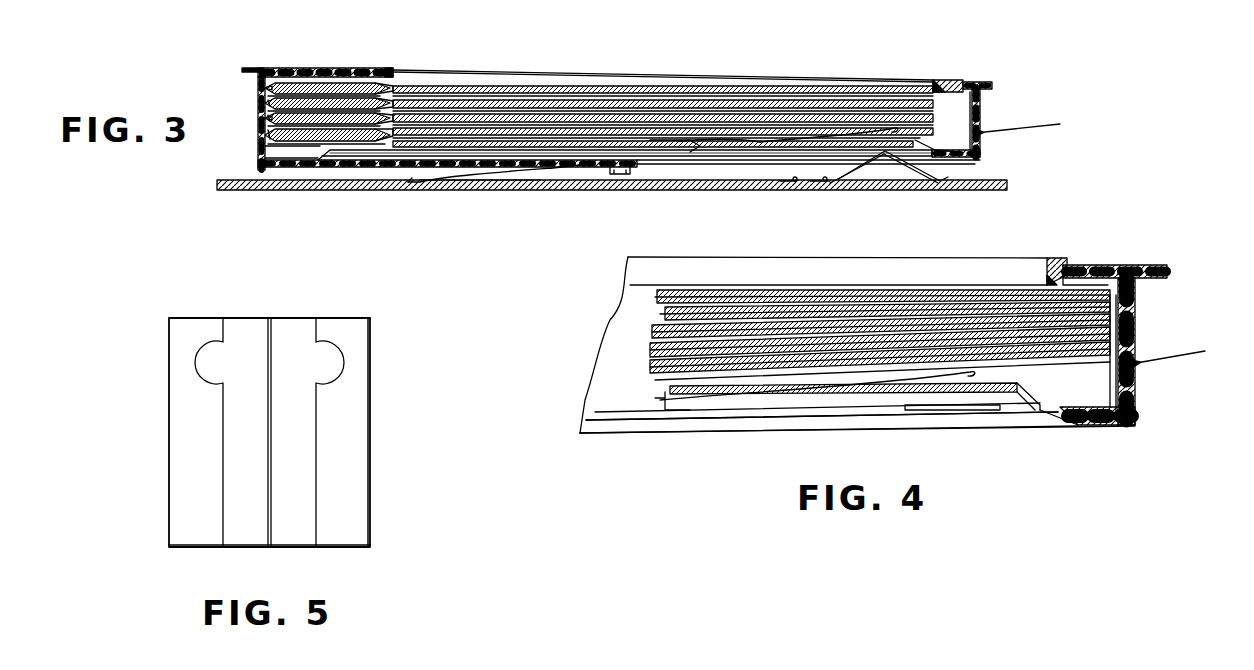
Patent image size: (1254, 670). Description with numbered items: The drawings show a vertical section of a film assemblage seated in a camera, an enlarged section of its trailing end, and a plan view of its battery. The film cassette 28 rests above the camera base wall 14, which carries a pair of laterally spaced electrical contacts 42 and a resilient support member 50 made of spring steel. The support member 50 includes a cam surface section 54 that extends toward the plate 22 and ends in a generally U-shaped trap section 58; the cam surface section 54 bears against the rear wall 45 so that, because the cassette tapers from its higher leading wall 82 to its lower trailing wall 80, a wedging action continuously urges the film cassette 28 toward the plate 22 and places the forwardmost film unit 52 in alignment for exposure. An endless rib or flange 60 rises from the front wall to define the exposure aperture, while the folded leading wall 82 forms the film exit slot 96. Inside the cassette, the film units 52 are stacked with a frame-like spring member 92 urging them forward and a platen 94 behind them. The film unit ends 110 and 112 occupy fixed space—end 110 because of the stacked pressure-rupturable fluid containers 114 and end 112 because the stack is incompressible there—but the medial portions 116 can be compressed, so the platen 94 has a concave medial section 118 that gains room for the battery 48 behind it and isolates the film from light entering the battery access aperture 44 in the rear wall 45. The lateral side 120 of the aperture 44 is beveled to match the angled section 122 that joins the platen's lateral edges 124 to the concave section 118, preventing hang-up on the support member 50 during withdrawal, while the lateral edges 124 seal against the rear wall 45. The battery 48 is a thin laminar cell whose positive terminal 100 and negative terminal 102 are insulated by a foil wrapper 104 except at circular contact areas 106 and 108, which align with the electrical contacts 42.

In FIG. 3, the base wall 14 is at (777, 193).
In FIG. 3, the plate 22 is at (300, 68).
In FIG. 4, the plate 22 is at (1108, 268).
In FIG. 3, the film cassette 28 is at (1036, 120).
In FIG. 4, the film cassette 28 is at (1192, 348).
In FIG. 3, the electrical contacts 42 is at (938, 186).
In FIG. 3, the battery access aperture 44 is at (930, 161).
In FIG. 4, the battery access aperture 44 is at (1027, 421).
In FIG. 3, the rear wall 45 is at (980, 153).
In FIG. 4, the rear wall 45 is at (1103, 418).
In FIG. 3, the battery 48 is at (720, 153).
In FIG. 4, the battery 48 is at (762, 408).
In FIG. 5, the battery 48 is at (375, 418).
In FIG. 3, the support member 50 is at (470, 183).
In FIG. 3, the film units 52 is at (500, 100).
In FIG. 3, the cam surface section 54 is at (548, 187).
In FIG. 3, the trap section 58 is at (618, 176).
In FIG. 3, the rib or flange 60 is at (390, 70).
In FIG. 4, the rib or flange 60 is at (1050, 268).
In FIG. 3, the trailing wall 80 is at (982, 110).
In FIG. 4, the trailing wall 80 is at (1137, 323).
In FIG. 3, the leading wall 82 is at (262, 120).
In FIG. 3, the spring member 92 is at (898, 132).
In FIG. 4, the spring member 92 is at (975, 375).
In FIG. 3, the platen 94 is at (308, 160).
In FIG. 4, the platen 94 is at (668, 391).
In FIG. 3, the film exit slot 96 is at (262, 91).
In FIG. 5, the positive terminal 100 is at (291, 432).
In FIG. 5, the negative terminal 102 is at (248, 432).
In FIG. 5, the foil wrapper 104 is at (205, 320).
In FIG. 5, the contact area 106 is at (336, 357).
In FIG. 5, the contact area 108 is at (205, 356).
In FIG. 3, the end 110 is at (322, 110).
In FIG. 3, the end 112 is at (923, 93).
In FIG. 4, the end 112 is at (1010, 315).
In FIG. 3, the fluid containers 114 is at (275, 146).
In FIG. 3, the medial portions 116 is at (600, 110).
In FIG. 4, the medial portions 116 is at (750, 318).
In FIG. 3, the concave medial section 118 is at (690, 150).
In FIG. 4, the lateral side 120 is at (1050, 416).
In FIG. 3, the angled section 122 is at (928, 148).
In FIG. 4, the angled section 122 is at (1032, 397).
In FIG. 4, the lateral edges 124 is at (1085, 406).